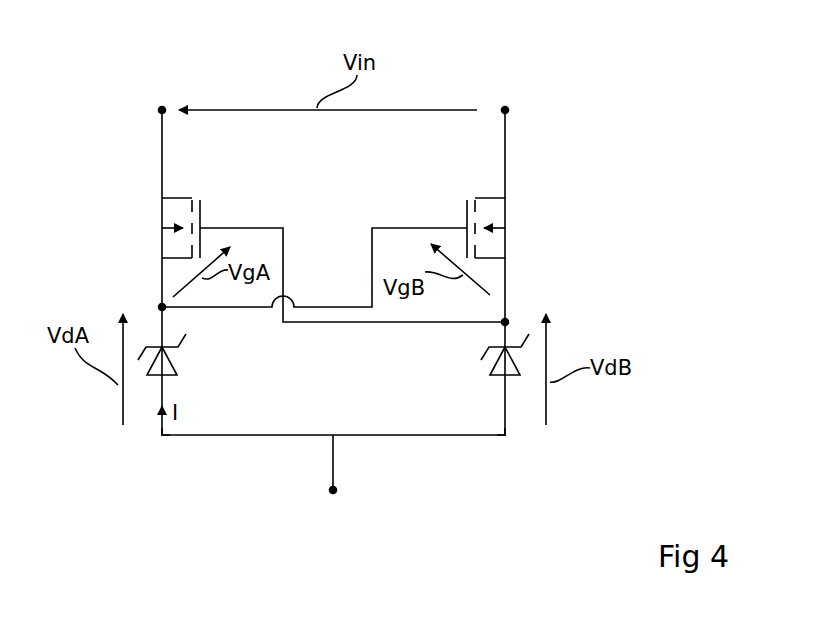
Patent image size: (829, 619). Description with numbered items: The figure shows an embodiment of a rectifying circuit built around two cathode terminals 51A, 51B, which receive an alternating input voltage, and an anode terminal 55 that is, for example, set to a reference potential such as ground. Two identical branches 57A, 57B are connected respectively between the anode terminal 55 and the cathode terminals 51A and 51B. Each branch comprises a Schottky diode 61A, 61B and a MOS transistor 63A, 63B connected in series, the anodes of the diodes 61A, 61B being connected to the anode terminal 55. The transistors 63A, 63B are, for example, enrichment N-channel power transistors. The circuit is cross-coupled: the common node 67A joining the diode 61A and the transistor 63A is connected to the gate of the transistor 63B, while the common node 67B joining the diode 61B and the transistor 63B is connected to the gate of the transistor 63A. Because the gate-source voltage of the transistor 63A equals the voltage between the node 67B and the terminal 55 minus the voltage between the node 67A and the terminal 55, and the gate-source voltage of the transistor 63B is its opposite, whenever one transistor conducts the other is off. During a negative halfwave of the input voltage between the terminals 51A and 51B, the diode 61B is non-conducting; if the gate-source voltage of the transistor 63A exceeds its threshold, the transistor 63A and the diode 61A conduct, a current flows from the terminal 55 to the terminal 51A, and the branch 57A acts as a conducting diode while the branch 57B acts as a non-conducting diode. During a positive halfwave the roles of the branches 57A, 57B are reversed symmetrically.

The cathode terminal 51A is at (162, 106).
The cathode terminal 51B is at (505, 106).
The MOS transistor 63A is at (193, 182).
The MOS transistor 63B is at (475, 181).
The common node 67A is at (164, 310).
The common node 67B is at (503, 324).
The Schottky diode 61A is at (172, 367).
The Schottky diode 61B is at (495, 367).
The branch 57A is at (161, 458).
The branch 57B is at (500, 452).
The anode terminal 55 is at (333, 492).